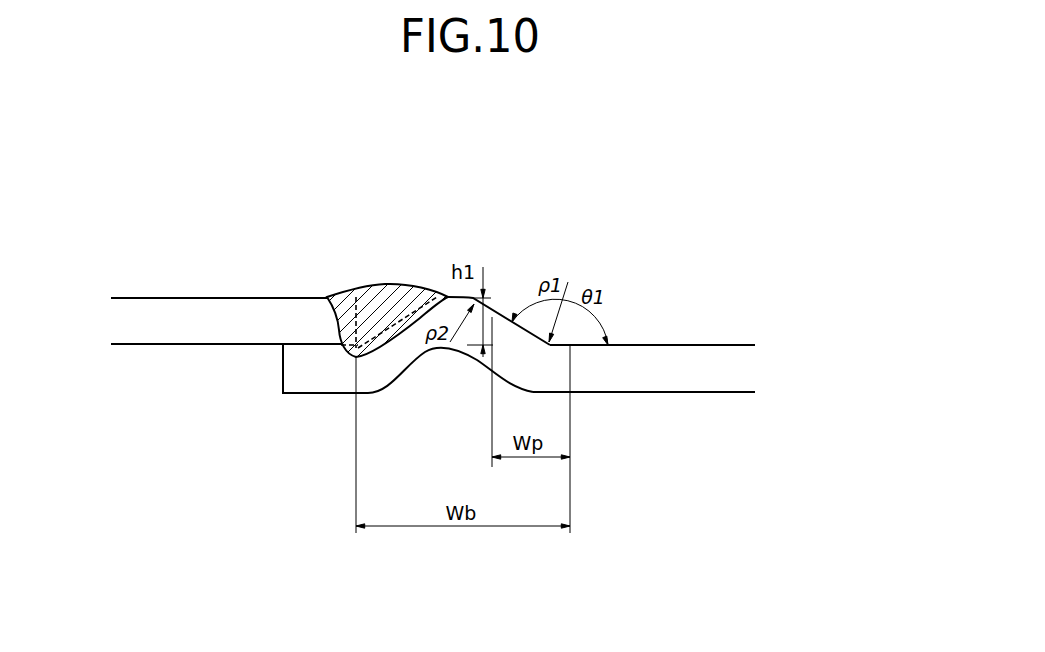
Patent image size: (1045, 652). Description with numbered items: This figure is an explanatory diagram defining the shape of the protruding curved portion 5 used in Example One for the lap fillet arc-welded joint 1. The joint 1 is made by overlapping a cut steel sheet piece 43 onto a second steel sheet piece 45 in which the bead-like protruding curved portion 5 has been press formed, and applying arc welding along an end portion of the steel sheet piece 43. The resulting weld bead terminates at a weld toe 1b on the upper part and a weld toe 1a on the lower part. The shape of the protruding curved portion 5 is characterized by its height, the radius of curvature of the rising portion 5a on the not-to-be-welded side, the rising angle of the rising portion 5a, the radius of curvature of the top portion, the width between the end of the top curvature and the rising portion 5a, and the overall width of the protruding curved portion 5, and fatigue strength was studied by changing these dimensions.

The lap fillet arc-welded joint 1 is at (631, 180).
The weld toe (on the lower part) 1a is at (448, 298).
The weld toe (on the upper part) 1b is at (330, 298).
The steel sheet piece 43 is at (197, 298).
The steel sheet piece 45 is at (695, 344).
The protruding curved portion 5 is at (417, 348).
The rising portion 5a is at (590, 343).